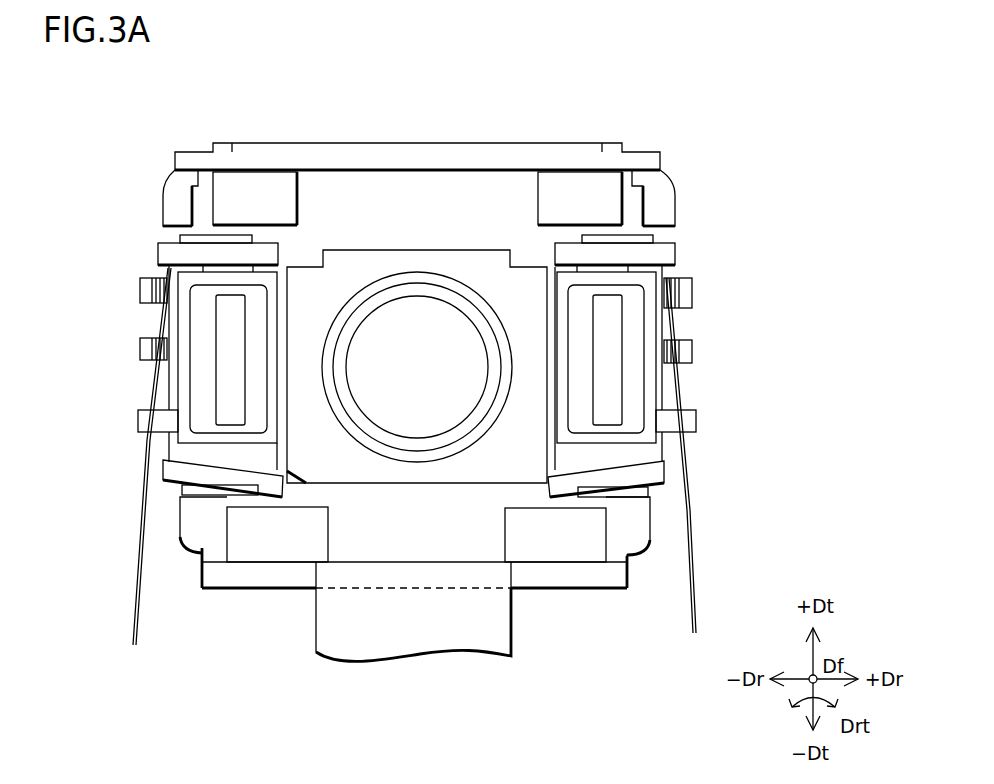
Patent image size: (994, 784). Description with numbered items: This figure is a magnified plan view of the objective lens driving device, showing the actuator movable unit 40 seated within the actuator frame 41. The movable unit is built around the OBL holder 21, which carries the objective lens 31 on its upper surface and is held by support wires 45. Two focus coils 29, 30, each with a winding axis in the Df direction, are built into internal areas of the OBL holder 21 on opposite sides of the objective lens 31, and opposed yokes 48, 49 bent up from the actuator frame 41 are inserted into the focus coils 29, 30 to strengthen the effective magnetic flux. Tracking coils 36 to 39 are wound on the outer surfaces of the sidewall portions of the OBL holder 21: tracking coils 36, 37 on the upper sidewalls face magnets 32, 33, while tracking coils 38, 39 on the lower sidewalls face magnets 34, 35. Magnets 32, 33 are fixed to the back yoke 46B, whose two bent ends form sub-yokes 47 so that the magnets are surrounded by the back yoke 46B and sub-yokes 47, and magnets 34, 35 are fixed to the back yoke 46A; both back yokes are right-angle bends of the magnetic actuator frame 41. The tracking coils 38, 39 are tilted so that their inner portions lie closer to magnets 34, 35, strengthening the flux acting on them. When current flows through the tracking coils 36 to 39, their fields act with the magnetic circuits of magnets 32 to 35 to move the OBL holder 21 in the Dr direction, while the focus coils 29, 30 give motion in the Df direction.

The OBL holder 21 is at (417, 366).
The focus coil 29 is at (655, 393).
The focus coil 30 is at (178, 386).
The objective lens 31 is at (417, 367).
The magnet 32 is at (239, 180).
The magnet 33 is at (596, 180).
The magnet 34 is at (544, 552).
The magnet 35 is at (235, 552).
The tracking coil 36 is at (163, 250).
The tracking coil 37 is at (676, 253).
The tracking coil 38 is at (668, 471).
The tracking coil 39 is at (165, 473).
The actuator movable unit 40 is at (334, 229).
The actuator frame 41 is at (677, 151).
The support wires 45 is at (695, 578).
The back yoke 46A is at (385, 577).
The back yoke 46B is at (403, 156).
The sub-yokes 47 is at (167, 188).
The opposed yoke 48 is at (608, 337).
The opposed yoke 49 is at (223, 320).